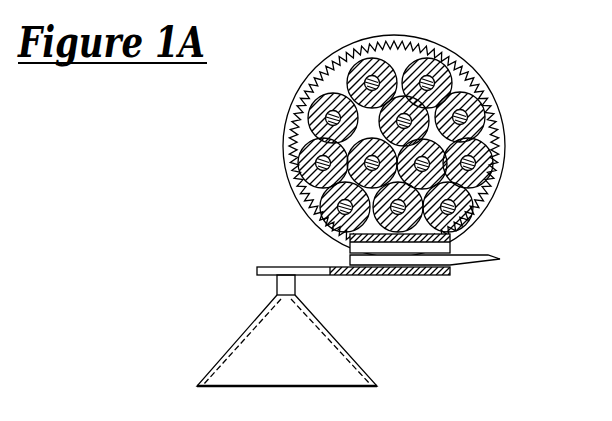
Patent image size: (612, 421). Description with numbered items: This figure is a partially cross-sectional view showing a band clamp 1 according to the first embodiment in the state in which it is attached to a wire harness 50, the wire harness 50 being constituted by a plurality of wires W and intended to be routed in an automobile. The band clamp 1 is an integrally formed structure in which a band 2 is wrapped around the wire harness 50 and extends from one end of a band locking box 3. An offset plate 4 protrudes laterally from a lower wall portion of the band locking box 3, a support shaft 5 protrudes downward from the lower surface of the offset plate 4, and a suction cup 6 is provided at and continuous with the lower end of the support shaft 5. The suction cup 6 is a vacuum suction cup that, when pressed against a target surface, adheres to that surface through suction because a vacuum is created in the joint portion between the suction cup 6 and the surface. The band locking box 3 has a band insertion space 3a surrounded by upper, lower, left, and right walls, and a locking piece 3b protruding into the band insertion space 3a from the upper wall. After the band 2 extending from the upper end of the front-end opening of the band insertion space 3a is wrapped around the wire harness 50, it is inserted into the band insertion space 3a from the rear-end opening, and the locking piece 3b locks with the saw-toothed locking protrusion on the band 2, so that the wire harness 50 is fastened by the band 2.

The band clamp 1 is at (452, 280).
The band 2 is at (483, 82).
The band locking box 3 is at (421, 276).
The band insertion space 3a is at (442, 250).
The locking piece 3b is at (383, 263).
The offset plate 4 is at (304, 270).
The support shaft 5 is at (280, 287).
The suction cup 6 is at (226, 352).
The wire harness 50 is at (484, 132).
The wires W is at (493, 167).